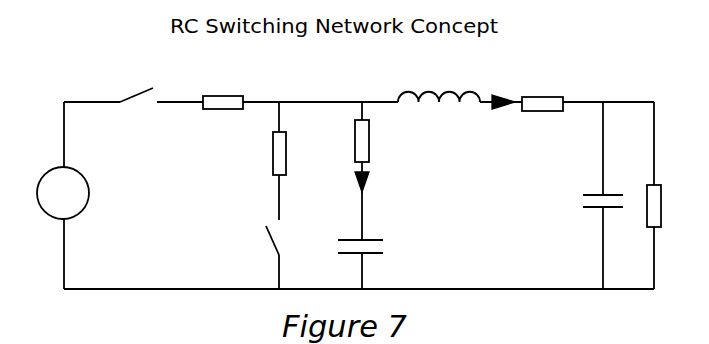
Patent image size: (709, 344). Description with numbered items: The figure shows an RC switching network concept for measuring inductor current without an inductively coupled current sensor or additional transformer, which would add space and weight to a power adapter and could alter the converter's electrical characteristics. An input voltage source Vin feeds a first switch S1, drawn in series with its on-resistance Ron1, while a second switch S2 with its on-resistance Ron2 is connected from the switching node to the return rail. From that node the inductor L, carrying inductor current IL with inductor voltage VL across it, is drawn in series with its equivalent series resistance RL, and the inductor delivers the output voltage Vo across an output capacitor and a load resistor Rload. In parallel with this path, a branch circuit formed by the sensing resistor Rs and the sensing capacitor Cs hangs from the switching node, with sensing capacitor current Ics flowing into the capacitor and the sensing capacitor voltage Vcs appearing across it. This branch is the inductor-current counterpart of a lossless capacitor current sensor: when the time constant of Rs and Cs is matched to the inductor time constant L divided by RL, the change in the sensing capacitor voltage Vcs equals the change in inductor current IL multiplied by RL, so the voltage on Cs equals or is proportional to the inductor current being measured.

The first switch S1 is at (139, 81).
The on-resistance of first switch Ron1 is at (223, 86).
The on-resistance of second switch Ron2 is at (251, 153).
The second switch S2 is at (256, 243).
The sensing resistor Rs is at (348, 141).
The sensing capacitor current Ics is at (378, 183).
The sensing capacitor Cs is at (378, 256).
The sensing capacitor voltage Vcs is at (326, 244).
The input voltage source Vin is at (81, 195).
The inductor L is at (439, 80).
The inductor voltage VL is at (441, 132).
The inductor current IL is at (500, 124).
The equivalent series resistance of inductor RL is at (542, 87).
The output voltage Vo is at (585, 202).
The load resistor Rload is at (654, 206).